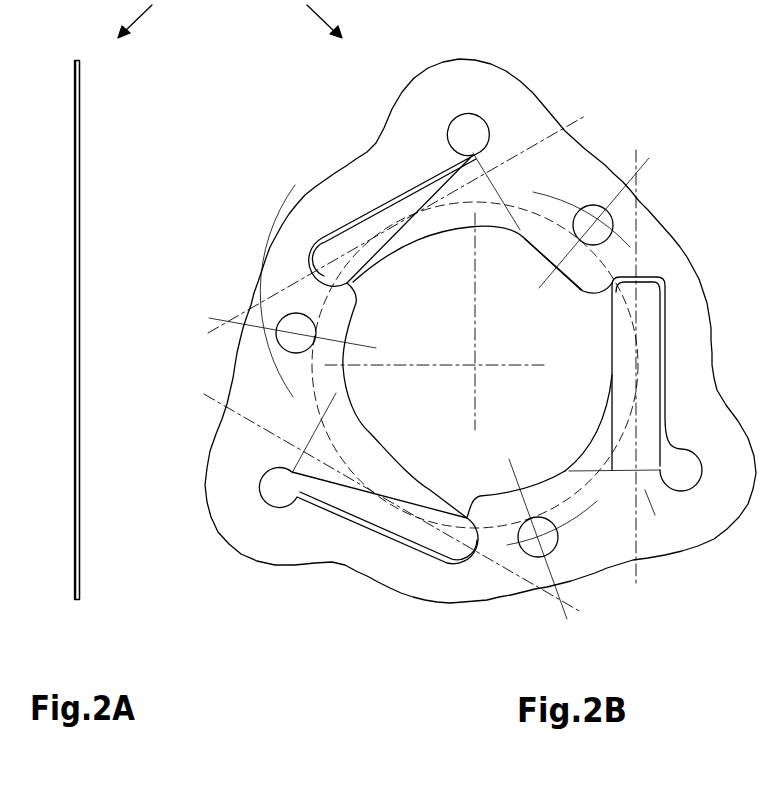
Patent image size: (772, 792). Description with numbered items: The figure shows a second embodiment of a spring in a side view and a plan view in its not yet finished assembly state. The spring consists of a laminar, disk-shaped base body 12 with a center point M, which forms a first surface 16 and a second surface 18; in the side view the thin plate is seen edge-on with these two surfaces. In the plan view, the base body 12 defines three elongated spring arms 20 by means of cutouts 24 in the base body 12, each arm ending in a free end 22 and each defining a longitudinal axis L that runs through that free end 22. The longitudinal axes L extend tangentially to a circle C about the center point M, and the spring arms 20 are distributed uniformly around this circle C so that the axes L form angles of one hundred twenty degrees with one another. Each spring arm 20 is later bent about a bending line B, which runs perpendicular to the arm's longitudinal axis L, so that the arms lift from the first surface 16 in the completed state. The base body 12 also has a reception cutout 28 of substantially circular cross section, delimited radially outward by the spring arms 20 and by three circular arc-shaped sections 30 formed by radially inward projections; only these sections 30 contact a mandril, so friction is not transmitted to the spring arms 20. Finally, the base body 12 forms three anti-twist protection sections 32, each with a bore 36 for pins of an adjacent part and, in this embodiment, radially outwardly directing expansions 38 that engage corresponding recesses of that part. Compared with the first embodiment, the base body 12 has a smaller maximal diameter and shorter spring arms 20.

In FIG. 2A, the base body 12 is at (115, 345).
In FIG. 2B, the base body 12 is at (433, 331).
In FIG. 2A, the first surface 16 is at (77, 125).
In FIG. 2B, the first surface 16 is at (241, 442).
In FIG. 2A, the second surface 18 is at (72, 533).
In FIG. 2B, the spring arms 20 is at (403, 233).
In FIG. 2B, the free end 22 is at (637, 277).
In FIG. 2B, the slot 24 is at (480, 390).
In FIG. 2B, the reception cutout 28 is at (477, 372).
In FIG. 2B, the circular arc-shaped sections 30 is at (577, 277).
In FIG. 2B, the anti-twist protection sections 32 is at (394, 309).
In FIG. 2B, the bore 36 is at (283, 338).
In FIG. 2B, the radially outwardly directing expansions 38 is at (462, 78).
In FIG. 2B, the longitudinal axis L is at (575, 120).
In FIG. 2B, the circle C is at (352, 465).
In FIG. 2B, the center point M is at (475, 365).
In FIG. 2B, the bending line B is at (645, 490).